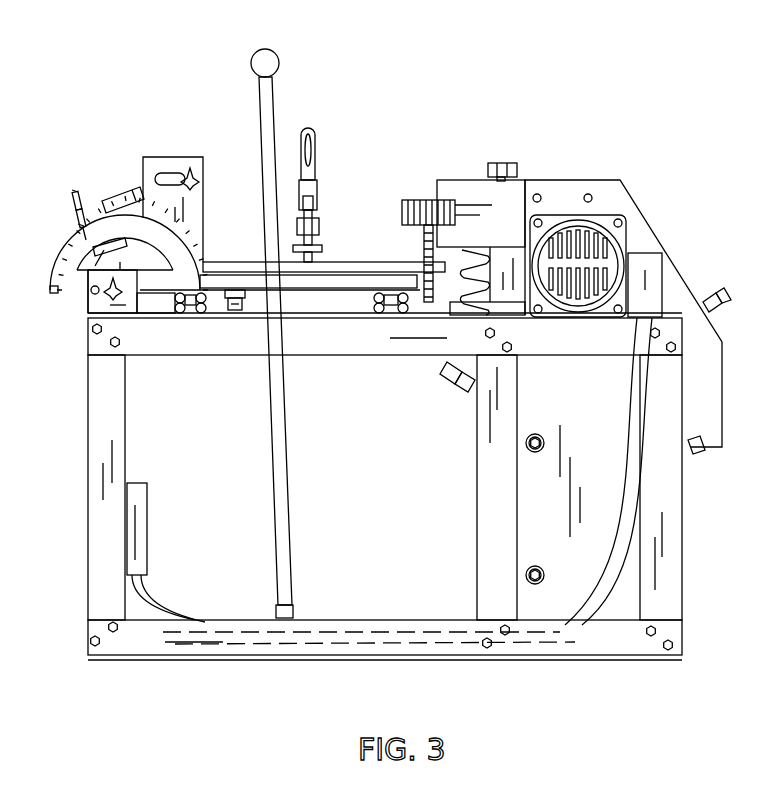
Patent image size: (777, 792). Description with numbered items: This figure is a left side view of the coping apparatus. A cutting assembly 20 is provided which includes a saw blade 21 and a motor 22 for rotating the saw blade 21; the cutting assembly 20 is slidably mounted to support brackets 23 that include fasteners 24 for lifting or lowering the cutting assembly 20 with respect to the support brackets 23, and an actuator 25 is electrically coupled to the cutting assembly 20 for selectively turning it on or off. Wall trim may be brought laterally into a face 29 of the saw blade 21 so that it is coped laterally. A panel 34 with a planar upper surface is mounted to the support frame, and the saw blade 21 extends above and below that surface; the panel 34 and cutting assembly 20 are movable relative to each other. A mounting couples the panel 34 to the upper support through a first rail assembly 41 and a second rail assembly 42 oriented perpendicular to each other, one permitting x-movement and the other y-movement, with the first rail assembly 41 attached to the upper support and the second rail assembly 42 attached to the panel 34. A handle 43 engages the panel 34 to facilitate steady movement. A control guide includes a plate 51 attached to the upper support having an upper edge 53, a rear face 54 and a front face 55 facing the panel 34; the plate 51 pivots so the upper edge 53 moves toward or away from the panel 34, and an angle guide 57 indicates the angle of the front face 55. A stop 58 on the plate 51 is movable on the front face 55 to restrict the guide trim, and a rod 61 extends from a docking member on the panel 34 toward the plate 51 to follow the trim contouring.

The cutting assembly 20 is at (620, 166).
The saw blade 21 is at (464, 255).
The motor 22 is at (612, 260).
The support brackets 23 is at (598, 547).
The fasteners 24 is at (543, 578).
The actuator 25 is at (140, 560).
The face 29 is at (508, 260).
The panel 34 is at (350, 277).
The first rail assembly 41 is at (178, 313).
The second rail assembly 42 is at (258, 300).
The handle 43 is at (280, 100).
The plate 51 is at (72, 190).
The upper edge 53 is at (77, 192).
The rear face 54 is at (78, 224).
The front face 55 is at (83, 222).
The angle guide 57 is at (55, 293).
The stop 58 is at (97, 268).
The rod 61 is at (112, 193).